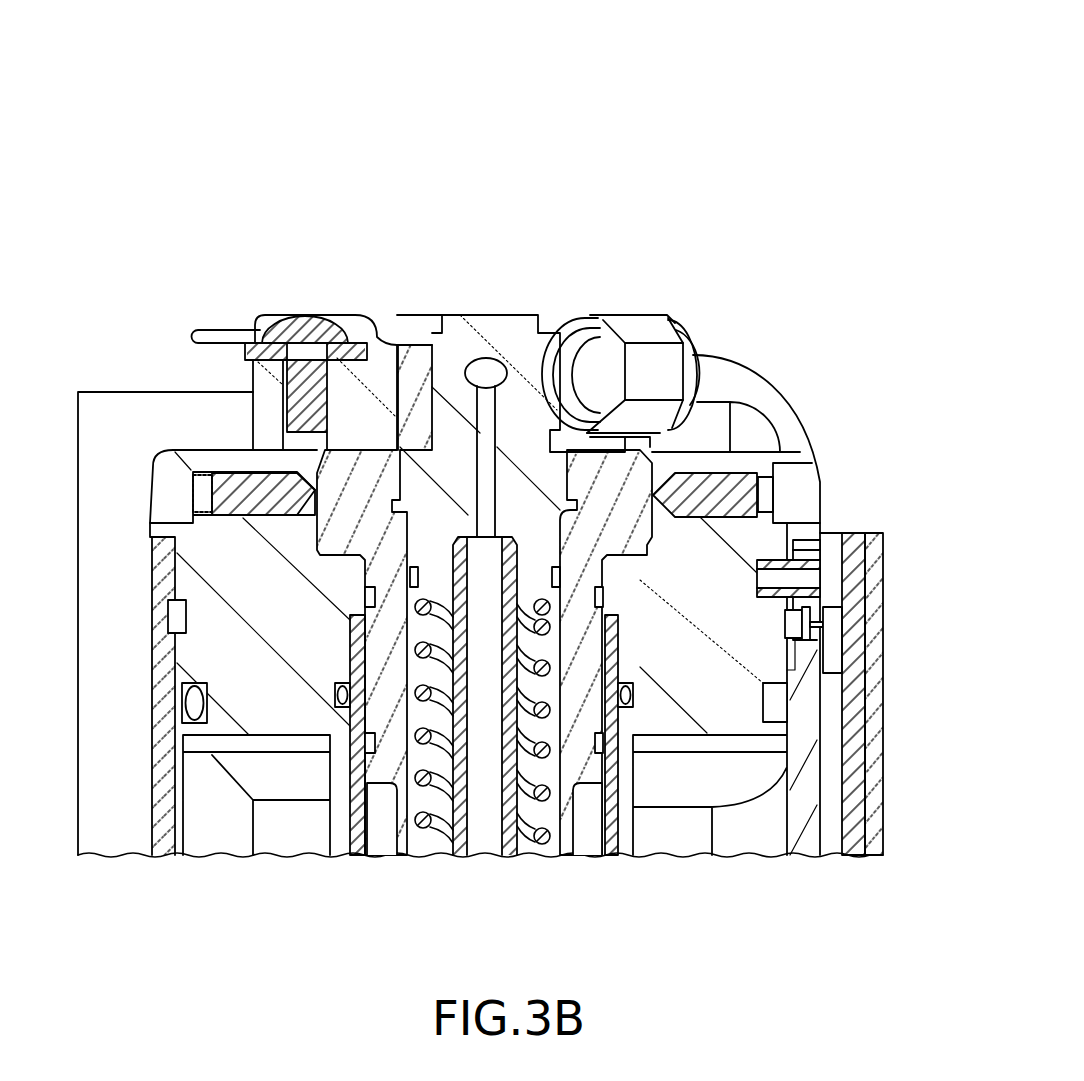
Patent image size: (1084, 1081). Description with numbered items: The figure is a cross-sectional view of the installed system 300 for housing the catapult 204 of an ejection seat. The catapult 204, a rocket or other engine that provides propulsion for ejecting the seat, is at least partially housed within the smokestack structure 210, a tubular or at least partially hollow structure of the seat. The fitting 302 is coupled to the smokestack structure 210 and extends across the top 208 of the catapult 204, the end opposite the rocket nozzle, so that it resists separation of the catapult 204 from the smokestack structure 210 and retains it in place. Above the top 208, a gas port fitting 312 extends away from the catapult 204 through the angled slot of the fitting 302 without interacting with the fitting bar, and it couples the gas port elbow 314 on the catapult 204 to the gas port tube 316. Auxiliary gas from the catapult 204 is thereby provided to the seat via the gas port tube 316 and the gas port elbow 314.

The system for housing the catapult 300 is at (576, 132).
The fitting 302 is at (353, 408).
The gas port elbow 314 is at (513, 330).
The gas port fitting 312 is at (639, 330).
The gas port tube 316 is at (765, 375).
The top 208 is at (753, 452).
The catapult 204 is at (773, 542).
The smokestack structure 210 is at (875, 582).